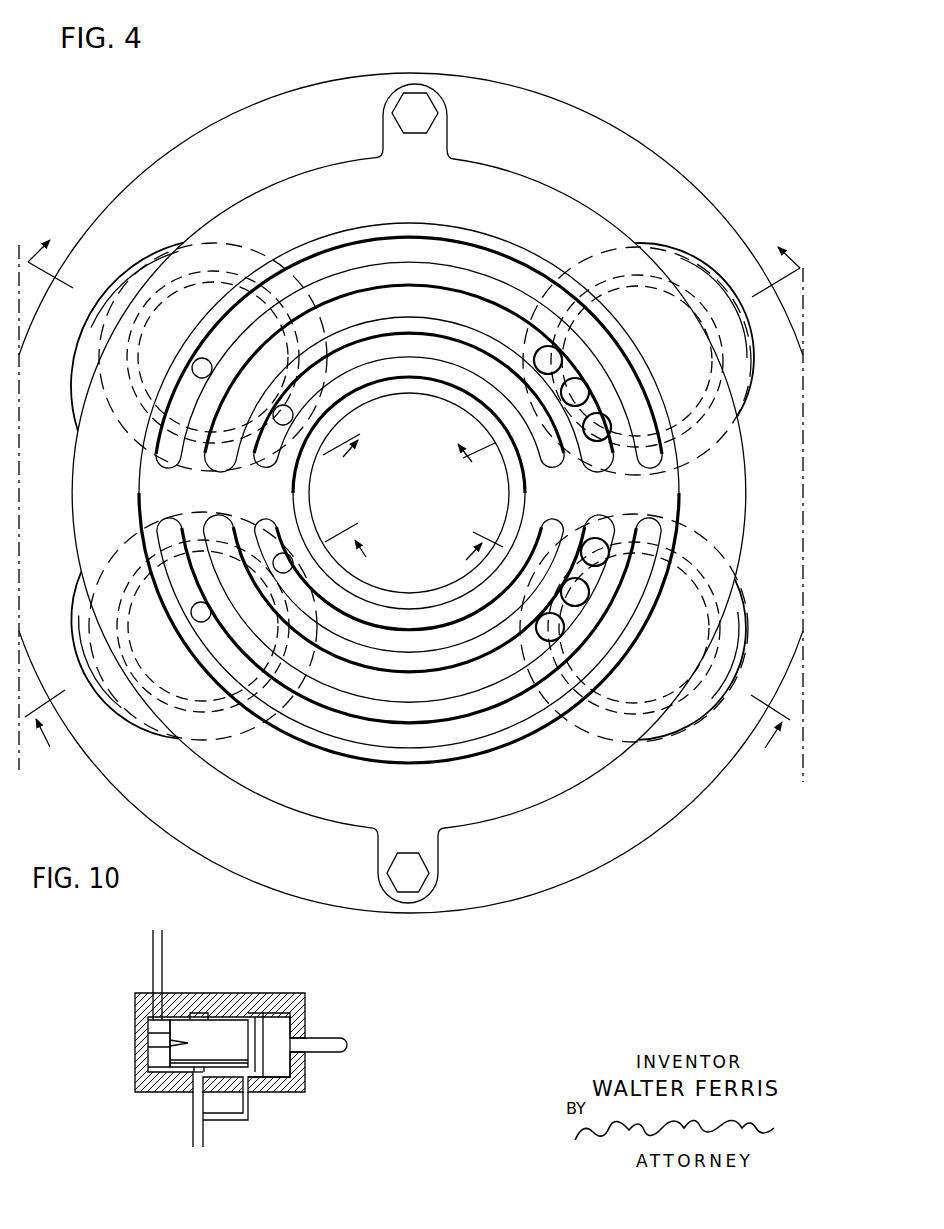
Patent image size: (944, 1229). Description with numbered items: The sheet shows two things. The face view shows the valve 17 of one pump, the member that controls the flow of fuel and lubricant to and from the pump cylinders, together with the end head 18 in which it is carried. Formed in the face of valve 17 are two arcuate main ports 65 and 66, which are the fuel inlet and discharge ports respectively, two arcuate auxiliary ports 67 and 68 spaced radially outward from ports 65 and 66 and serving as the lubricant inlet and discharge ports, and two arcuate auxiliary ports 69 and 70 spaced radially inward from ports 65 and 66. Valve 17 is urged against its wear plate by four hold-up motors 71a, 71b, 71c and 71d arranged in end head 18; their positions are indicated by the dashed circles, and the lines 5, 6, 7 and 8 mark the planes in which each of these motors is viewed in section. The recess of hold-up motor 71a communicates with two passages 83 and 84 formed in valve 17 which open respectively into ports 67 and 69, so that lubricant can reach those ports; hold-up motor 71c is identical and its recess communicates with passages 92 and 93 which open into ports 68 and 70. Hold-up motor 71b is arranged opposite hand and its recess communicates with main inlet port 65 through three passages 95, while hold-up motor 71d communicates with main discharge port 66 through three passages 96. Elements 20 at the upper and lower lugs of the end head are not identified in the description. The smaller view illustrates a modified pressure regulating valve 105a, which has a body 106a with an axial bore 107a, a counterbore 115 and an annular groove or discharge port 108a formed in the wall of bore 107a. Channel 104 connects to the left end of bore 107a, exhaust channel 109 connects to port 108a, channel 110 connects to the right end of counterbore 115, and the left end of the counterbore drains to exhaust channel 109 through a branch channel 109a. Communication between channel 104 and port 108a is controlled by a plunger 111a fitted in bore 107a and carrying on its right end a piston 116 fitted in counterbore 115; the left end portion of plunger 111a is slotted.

In FIG. 4, the section line 5- 5 is at (200, 335).
In FIG. 4, the section line 6- 6 is at (621, 342).
In FIG. 4, the section line 7- 7 is at (196, 644).
In FIG. 4, the section line 8- 8 is at (619, 654).
In FIG. 4, the valve 17 is at (554, 186).
In FIG. 4, the end head 18 is at (606, 124).
In FIG. 4, the bolt 20 is at (425, 118).
In FIG. 4, the main port 65 is at (222, 452).
In FIG. 4, the main port 66 is at (222, 518).
In FIG. 4, the auxiliary port 67 is at (437, 250).
In FIG. 4, the auxiliary port 68 is at (390, 742).
In FIG. 4, the auxiliary port 69 is at (556, 462).
In FIG. 4, the auxiliary port 70 is at (551, 533).
In FIG. 4, the hold-up motor 71a is at (179, 246).
In FIG. 4, the hold-up motor 71b is at (712, 248).
In FIG. 4, the hold-up motor 71c is at (163, 737).
In FIG. 4, the hold-up motor 71d is at (729, 715).
In FIG. 4, the passage 83 is at (195, 364).
In FIG. 4, the passage 84 is at (288, 420).
In FIG. 4, the passage 92 is at (195, 616).
In FIG. 4, the passage 93 is at (288, 558).
In FIG. 4, the passages 95 is at (600, 427).
In FIG. 4, the passages 96 is at (553, 627).
In FIG. 10, the channel 104 is at (161, 939).
In FIG. 10, the valve 105a is at (131, 1031).
In FIG. 10, the body 106a is at (177, 1083).
In FIG. 10, the axial bore 107a is at (158, 1063).
In FIG. 10, the annular groove or discharge port 108a is at (194, 1017).
In FIG. 10, the exhaust channel 109 is at (203, 1138).
In FIG. 10, the branch channel 109a is at (250, 1113).
In FIG. 10, the channel 110 is at (320, 1048).
In FIG. 10, the plunger 111a is at (222, 1053).
In FIG. 10, the counterbore 115 is at (283, 1027).
In FIG. 10, the piston 116 is at (258, 1020).